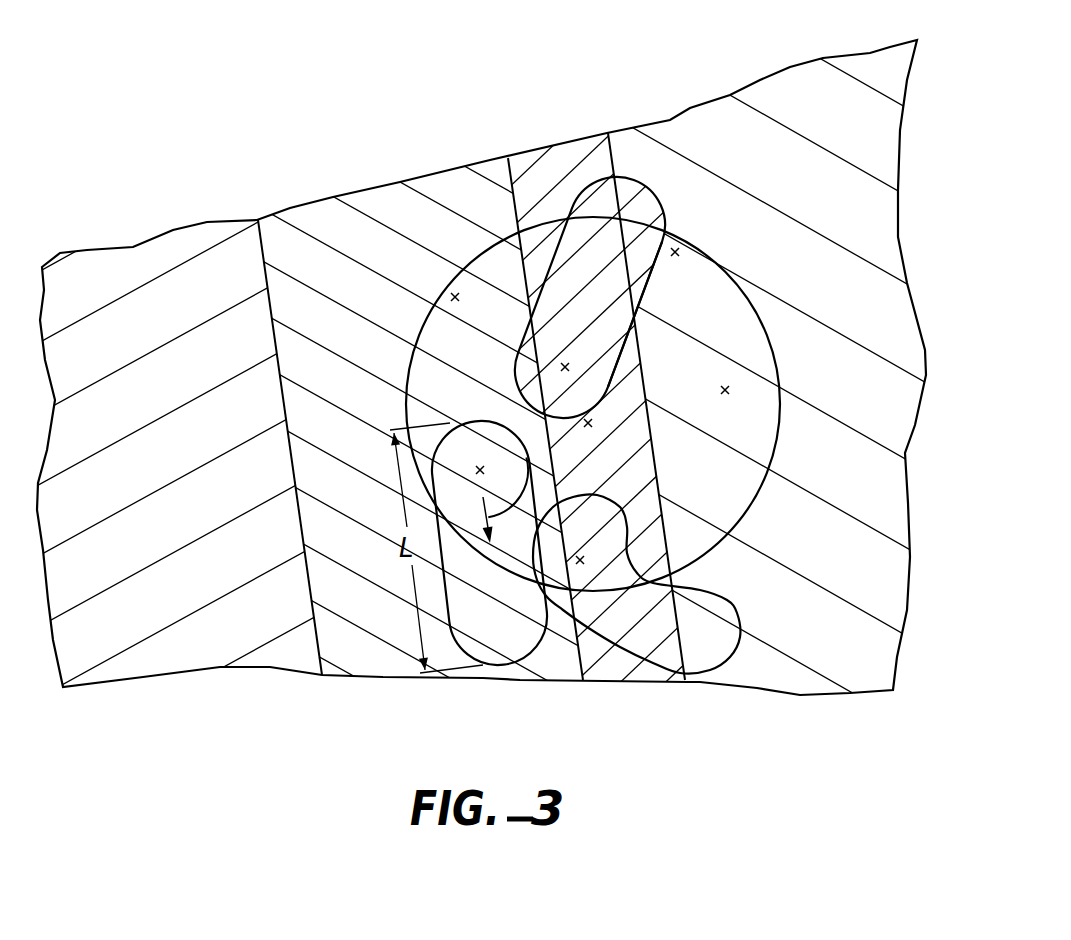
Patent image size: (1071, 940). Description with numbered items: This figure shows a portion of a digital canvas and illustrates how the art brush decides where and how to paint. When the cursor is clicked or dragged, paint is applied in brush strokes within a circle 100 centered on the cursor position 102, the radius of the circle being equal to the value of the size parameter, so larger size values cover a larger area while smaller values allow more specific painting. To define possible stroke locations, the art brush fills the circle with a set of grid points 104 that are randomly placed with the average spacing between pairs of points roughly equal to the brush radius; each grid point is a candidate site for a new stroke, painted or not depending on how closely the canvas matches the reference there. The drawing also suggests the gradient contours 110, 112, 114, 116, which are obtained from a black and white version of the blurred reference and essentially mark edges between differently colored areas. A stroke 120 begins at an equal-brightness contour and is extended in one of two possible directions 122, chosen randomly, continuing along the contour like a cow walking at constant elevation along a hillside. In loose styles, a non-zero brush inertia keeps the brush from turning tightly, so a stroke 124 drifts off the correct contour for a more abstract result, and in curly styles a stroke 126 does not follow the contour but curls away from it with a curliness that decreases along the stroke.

The circle 100 is at (767, 320).
The cursor position 102 is at (640, 372).
The grid points 104 is at (676, 251).
The gradient contour 110 is at (147, 662).
The gradient contour 112 is at (352, 668).
The gradient contour 114 is at (600, 670).
The gradient contour 116 is at (758, 680).
The stroke 120 is at (507, 670).
The directions 122 is at (533, 476).
The stroke 124 is at (643, 181).
The stroke 126 is at (723, 592).